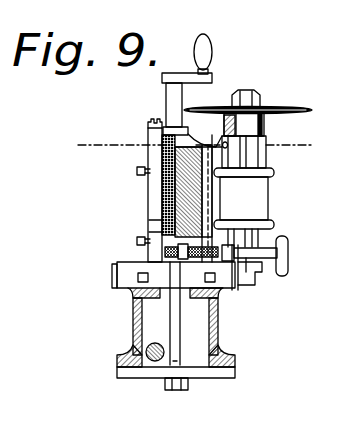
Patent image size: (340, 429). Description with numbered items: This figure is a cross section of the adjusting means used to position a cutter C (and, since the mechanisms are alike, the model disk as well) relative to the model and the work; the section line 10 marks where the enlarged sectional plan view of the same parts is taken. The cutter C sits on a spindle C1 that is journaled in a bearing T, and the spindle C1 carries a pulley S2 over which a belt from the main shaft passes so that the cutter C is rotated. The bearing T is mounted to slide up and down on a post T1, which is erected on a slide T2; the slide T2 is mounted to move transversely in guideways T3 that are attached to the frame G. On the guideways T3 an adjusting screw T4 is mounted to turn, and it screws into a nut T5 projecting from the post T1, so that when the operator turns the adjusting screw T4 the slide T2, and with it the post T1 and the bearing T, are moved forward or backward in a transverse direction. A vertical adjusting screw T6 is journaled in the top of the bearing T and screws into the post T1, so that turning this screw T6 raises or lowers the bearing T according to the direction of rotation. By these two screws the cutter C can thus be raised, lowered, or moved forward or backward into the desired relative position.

The section line 10 is at (92, 127).
The bearing T is at (150, 195).
The post T1 is at (149, 226).
The slide T2 is at (118, 267).
The guideways T3 is at (128, 289).
The adjusting screw T4 is at (252, 263).
The nut T5 is at (184, 254).
The vertical adjusting screw T6 is at (168, 108).
The cutter C is at (303, 108).
The spindle C1 is at (242, 130).
The pulley S2 is at (256, 204).
The frame G is at (130, 358).